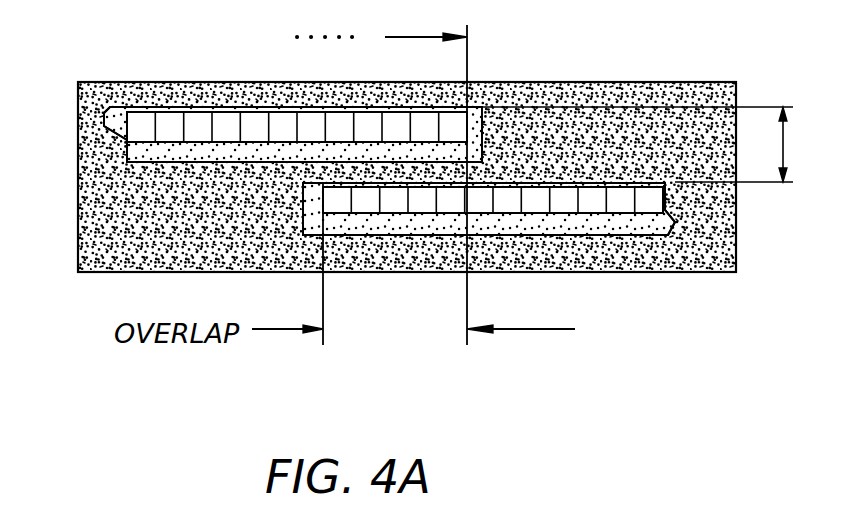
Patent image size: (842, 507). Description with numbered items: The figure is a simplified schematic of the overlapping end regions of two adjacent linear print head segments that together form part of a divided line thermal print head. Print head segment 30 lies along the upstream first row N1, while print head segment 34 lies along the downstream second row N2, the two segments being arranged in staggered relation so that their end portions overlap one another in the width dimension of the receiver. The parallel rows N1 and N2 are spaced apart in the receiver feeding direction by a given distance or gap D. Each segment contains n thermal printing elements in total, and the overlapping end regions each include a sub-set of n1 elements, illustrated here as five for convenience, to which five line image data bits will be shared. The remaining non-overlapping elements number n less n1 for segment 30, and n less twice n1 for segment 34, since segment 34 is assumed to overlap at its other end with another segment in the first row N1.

The linear print head segment 30 is at (78, 223).
The linear print head segment 34 is at (685, 272).
The gap D is at (647, 144).
The number of thermal printing elements per segment n is at (382, 36).
The number of overlapping thermal printing elements n1 is at (475, 333).
The first row N1 is at (37, 118).
The second row N2 is at (788, 256).